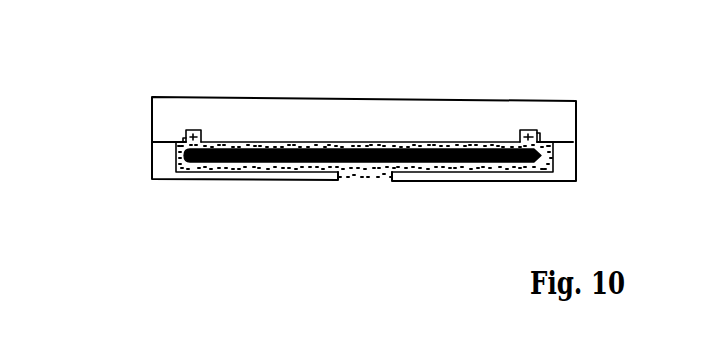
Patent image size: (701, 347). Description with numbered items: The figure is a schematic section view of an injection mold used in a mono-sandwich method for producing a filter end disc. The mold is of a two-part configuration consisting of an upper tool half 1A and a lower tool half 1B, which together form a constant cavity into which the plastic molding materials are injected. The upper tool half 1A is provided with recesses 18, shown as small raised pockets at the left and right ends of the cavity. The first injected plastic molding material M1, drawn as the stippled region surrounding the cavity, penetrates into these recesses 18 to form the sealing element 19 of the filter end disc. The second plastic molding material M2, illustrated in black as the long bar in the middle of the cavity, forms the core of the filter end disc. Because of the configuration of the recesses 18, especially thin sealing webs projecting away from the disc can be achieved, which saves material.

The upper tool half 1A is at (565, 116).
The lower tool half 1B is at (569, 173).
The recess 18 is at (195, 121).
The sealing element 19 is at (186, 142).
The first plastic molding material M1 is at (368, 172).
The second plastic molding material M2 is at (212, 162).